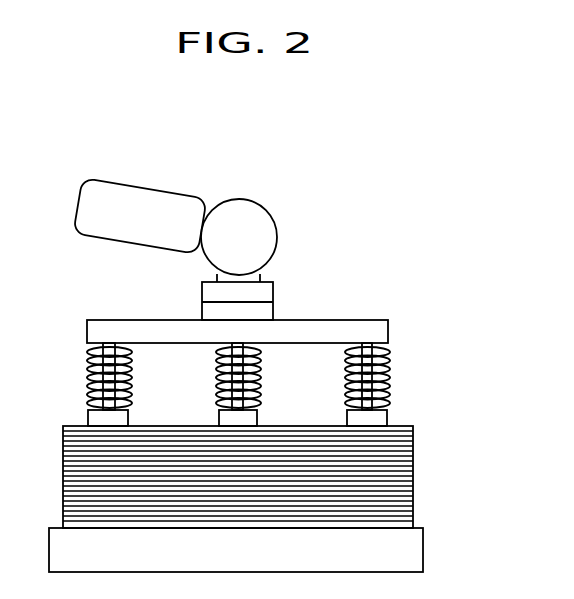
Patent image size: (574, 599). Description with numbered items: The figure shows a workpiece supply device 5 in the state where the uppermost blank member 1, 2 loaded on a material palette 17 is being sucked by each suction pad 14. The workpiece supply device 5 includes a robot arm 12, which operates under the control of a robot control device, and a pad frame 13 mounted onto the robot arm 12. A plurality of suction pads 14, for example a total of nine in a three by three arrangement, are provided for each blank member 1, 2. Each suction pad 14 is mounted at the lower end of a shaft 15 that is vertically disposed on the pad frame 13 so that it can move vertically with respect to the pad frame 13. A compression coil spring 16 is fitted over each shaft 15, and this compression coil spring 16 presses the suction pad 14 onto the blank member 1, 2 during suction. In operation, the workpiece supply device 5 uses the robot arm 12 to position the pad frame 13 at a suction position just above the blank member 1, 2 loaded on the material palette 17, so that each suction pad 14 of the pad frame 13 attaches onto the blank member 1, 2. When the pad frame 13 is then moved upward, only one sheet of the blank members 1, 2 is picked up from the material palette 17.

The blank member 1 is at (300, 477).
The blank member 2 is at (424, 456).
The workpiece supply device 5 is at (318, 210).
The robot arm 12 is at (137, 198).
The pad frame 13 is at (345, 318).
The suction pad 14 is at (85, 417).
The shaft 15 is at (107, 353).
The compression coil spring 16 is at (88, 377).
The material palette 17 is at (415, 550).